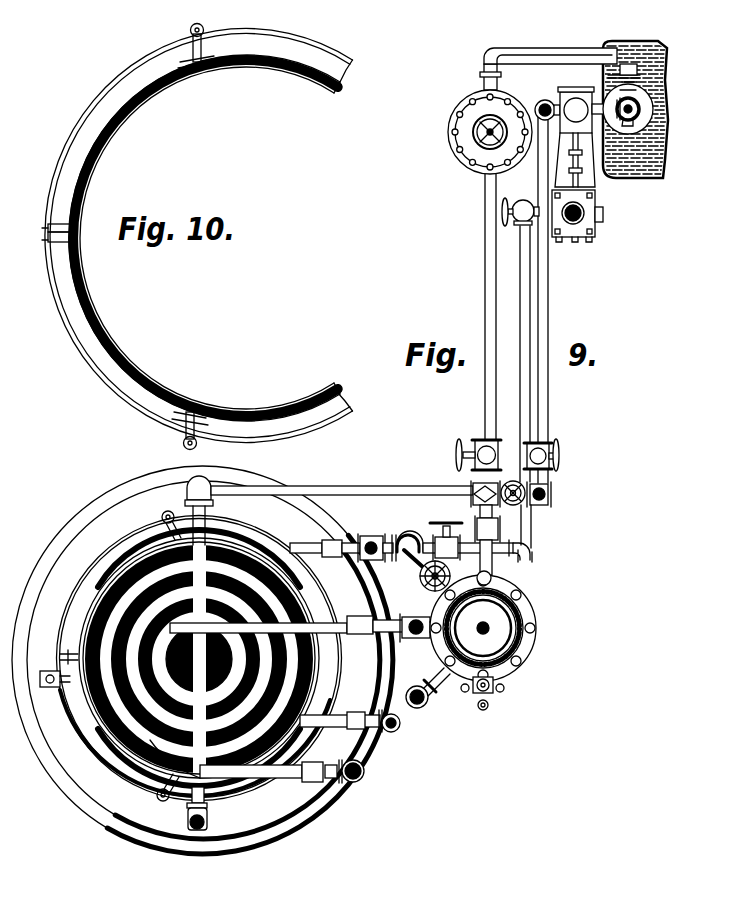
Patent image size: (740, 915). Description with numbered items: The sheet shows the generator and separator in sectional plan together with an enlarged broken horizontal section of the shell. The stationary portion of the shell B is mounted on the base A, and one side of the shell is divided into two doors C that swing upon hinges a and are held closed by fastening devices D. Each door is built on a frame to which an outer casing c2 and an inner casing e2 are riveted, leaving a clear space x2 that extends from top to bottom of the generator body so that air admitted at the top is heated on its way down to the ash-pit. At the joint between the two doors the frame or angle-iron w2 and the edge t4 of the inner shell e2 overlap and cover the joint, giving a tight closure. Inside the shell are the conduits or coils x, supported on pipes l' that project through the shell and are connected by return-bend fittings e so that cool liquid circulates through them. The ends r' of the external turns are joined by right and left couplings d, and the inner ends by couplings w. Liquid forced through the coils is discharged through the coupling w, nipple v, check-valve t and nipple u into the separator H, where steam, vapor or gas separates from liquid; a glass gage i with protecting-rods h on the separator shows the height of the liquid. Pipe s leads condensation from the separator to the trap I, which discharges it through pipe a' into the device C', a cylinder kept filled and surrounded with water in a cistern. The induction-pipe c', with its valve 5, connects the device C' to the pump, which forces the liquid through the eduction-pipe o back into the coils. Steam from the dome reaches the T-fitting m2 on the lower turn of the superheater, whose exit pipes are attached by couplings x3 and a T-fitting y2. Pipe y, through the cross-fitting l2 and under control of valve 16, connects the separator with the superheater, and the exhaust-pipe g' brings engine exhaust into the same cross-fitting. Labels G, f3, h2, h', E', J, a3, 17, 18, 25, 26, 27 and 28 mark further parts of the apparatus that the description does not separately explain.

In FIG. 10, the hinges a is at (187, 233).
In FIG. 9, the hinges a is at (169, 654).
In FIG. 10, the clear space x2 is at (205, 237).
In FIG. 9, the clear space x2 is at (199, 658).
In FIG. 10, the doors C is at (199, 236).
In FIG. 9, the doors C is at (202, 660).
In FIG. 10, the edge of the inner shell t4 is at (156, 240).
In FIG. 10, the outer casing c2 is at (48, 224).
In FIG. 10, the frame or angle-iron w2 is at (45, 235).
In FIG. 10, the inner casing e2 is at (72, 262).
In FIG. 9, the base A is at (203, 660).
In FIG. 9, the conduits or coils x is at (199, 659).
In FIG. 9, the ends of the external turns r' is at (248, 699).
In FIG. 9, the right and left couplings w is at (360, 625).
In FIG. 9, the nipple v is at (388, 616).
In FIG. 9, the check-valve t is at (416, 635).
In FIG. 9, the nipple u is at (432, 644).
In FIG. 9, the separator H is at (483, 628).
In FIG. 9, the pipe s is at (428, 688).
In FIG. 9, the protecting-rods h is at (486, 695).
In FIG. 9, the glass gage i is at (481, 695).
In FIG. 9, the right and left couplings x3 is at (341, 721).
In FIG. 9, the T-fitting y2 is at (398, 723).
In FIG. 9, the right and left couplings d is at (312, 772).
In FIG. 9, the eduction-pipe o is at (443, 449).
In FIG. 9, the return-bend fittings e is at (202, 808).
In FIG. 9, the pipe or tubing l' is at (210, 644).
In FIG. 9, the fastening devices D is at (59, 676).
In FIG. 9, the shell B is at (506, 364).
In FIG. 9, the jacket G is at (341, 707).
In FIG. 9, the pipe f3 is at (306, 538).
In FIG. 9, the coupling h2 is at (341, 558).
In FIG. 9, the T-fitting m2 is at (375, 540).
In FIG. 9, the flange h' is at (392, 536).
In FIG. 9, the cross-fitting l2 is at (406, 553).
In FIG. 9, the pipe y is at (413, 568).
In FIG. 9, the valve 16 is at (443, 573).
In FIG. 9, the valve 27 is at (453, 533).
In FIG. 9, the pipe 17 is at (512, 530).
In FIG. 9, the exhaust-pipe g' is at (516, 404).
In FIG. 9, the hand wheel 18 is at (513, 485).
In FIG. 9, the pipe a3 is at (355, 486).
In FIG. 9, the discharge-pipe a' is at (541, 316).
In FIG. 9, the valve 26 is at (469, 455).
In FIG. 9, the valve 25 is at (553, 455).
In FIG. 9, the trap I is at (480, 132).
In FIG. 9, the valve 28 is at (520, 212).
In FIG. 9, the valve E' is at (565, 127).
In FIG. 9, the induction-pipe c' is at (604, 108).
In FIG. 9, the device C' is at (628, 99).
In FIG. 9, the valve 5 is at (636, 128).
In FIG. 9, the pump J is at (577, 216).